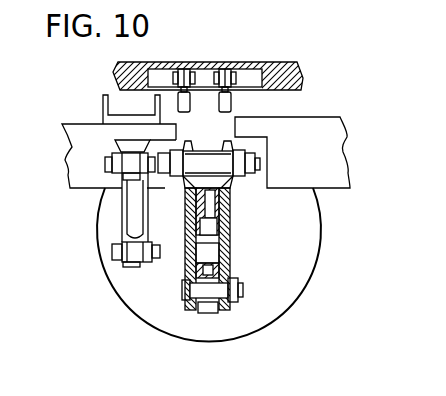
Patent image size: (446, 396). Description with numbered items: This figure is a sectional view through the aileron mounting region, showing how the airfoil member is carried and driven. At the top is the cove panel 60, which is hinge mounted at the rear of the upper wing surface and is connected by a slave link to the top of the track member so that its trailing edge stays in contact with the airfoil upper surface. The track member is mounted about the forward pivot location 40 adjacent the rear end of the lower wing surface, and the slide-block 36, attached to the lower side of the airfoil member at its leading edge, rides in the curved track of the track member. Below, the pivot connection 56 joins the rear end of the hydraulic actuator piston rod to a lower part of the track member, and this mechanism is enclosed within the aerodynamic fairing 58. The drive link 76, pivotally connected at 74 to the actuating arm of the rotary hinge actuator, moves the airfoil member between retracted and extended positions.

The slide-block 36 is at (230, 228).
The forward pivot location 40 is at (263, 160).
The pivot connection 56 is at (182, 292).
The aerodynamic fairing 58 is at (287, 308).
The cove panel 60 is at (280, 62).
The pivot connection 74 is at (117, 248).
The drive link 76 is at (127, 211).